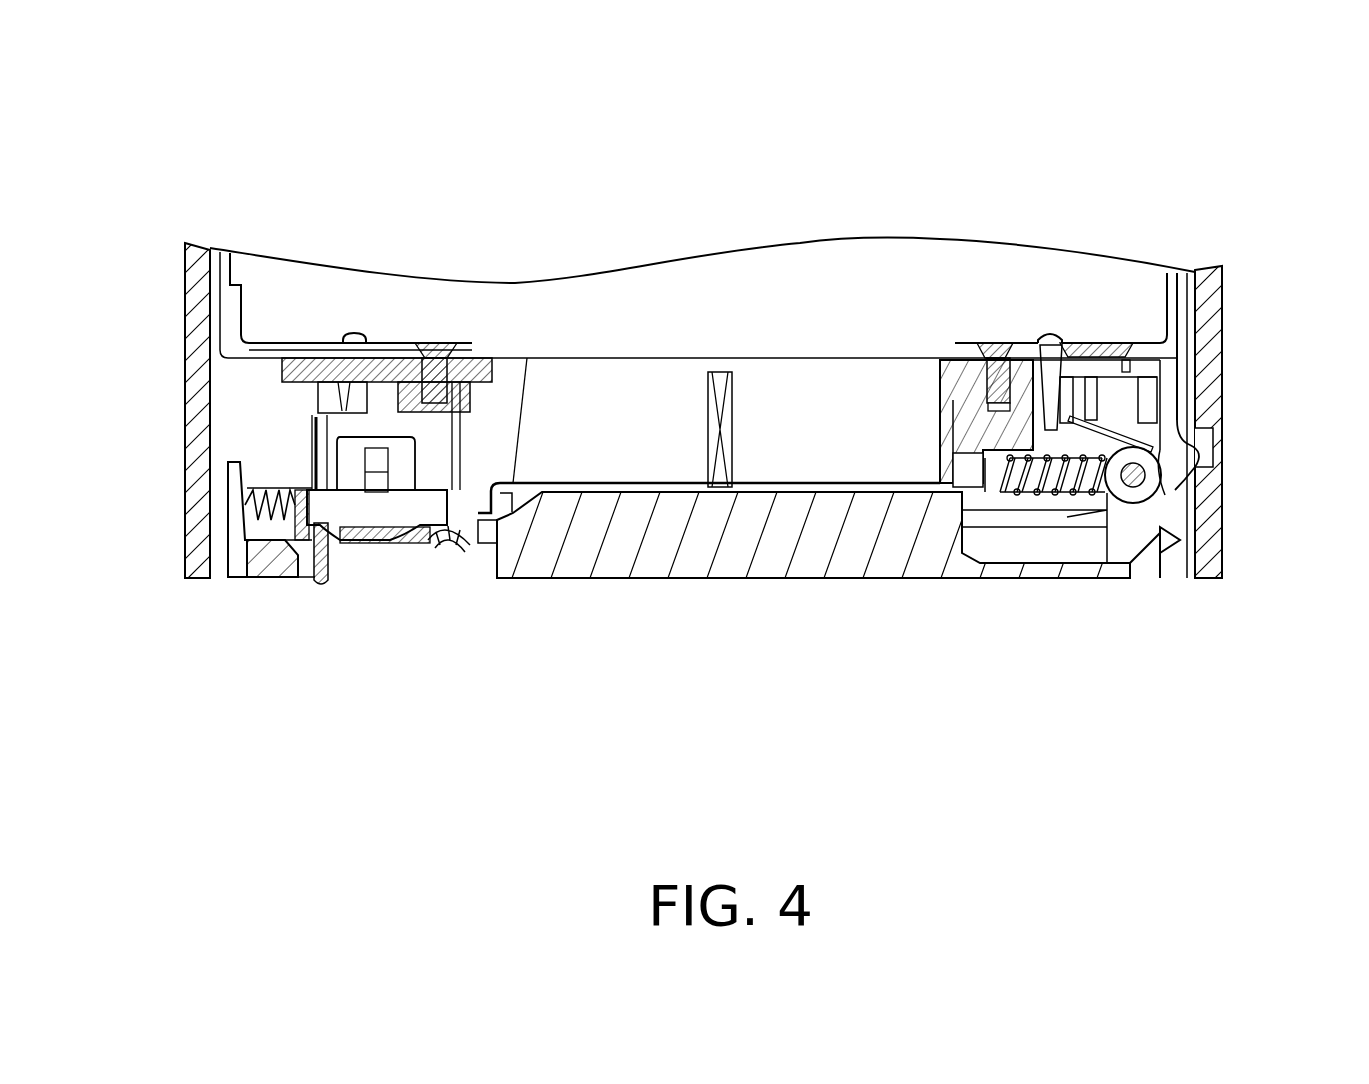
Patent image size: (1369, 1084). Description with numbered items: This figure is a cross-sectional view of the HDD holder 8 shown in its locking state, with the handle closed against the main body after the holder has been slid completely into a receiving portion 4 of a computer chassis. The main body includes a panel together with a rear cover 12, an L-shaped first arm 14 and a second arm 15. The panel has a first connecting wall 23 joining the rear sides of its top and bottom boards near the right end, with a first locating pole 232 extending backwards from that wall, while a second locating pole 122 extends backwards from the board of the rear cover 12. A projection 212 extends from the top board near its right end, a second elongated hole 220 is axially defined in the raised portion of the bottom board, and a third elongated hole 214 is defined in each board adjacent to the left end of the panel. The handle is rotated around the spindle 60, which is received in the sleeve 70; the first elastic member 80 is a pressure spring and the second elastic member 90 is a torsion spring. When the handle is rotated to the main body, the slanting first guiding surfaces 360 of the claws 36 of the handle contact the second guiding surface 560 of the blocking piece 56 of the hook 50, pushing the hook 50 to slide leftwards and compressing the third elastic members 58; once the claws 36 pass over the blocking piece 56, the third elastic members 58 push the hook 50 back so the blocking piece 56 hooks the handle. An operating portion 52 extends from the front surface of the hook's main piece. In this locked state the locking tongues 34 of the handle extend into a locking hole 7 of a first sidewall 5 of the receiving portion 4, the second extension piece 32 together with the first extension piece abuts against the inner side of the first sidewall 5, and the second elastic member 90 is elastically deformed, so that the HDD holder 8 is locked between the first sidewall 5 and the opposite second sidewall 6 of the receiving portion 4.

The receiving portion 4 is at (482, 750).
The first sidewall 5 is at (1205, 580).
The second sidewall 6 is at (207, 580).
The locking hole 7 is at (1215, 423).
The HDD holder 8 is at (549, 239).
The rear cover 12 is at (308, 372).
The first arm 14 is at (1173, 296).
The second arm 15 is at (231, 318).
The first connecting wall 23 is at (905, 400).
The second extension piece 32 is at (1185, 470).
The locking tongue 34 is at (1203, 455).
The claw 36 is at (490, 525).
The hook 50 is at (333, 510).
The operating portion 52 is at (323, 556).
The blocking piece 56 is at (446, 560).
The third elastic member 58 is at (280, 500).
The spindle 60 is at (1155, 522).
The sleeve 70 is at (1180, 490).
The first elastic member 80 is at (1018, 505).
The second elastic member 90 is at (1090, 522).
The second locating pole 122 is at (356, 335).
The projection 212 is at (680, 540).
The third elongated hole 214 is at (337, 436).
The second elongated hole 220 is at (1165, 400).
The first locating pole 232 is at (1052, 340).
The first guiding surface 360 is at (403, 560).
The second guiding surface 560 is at (485, 548).